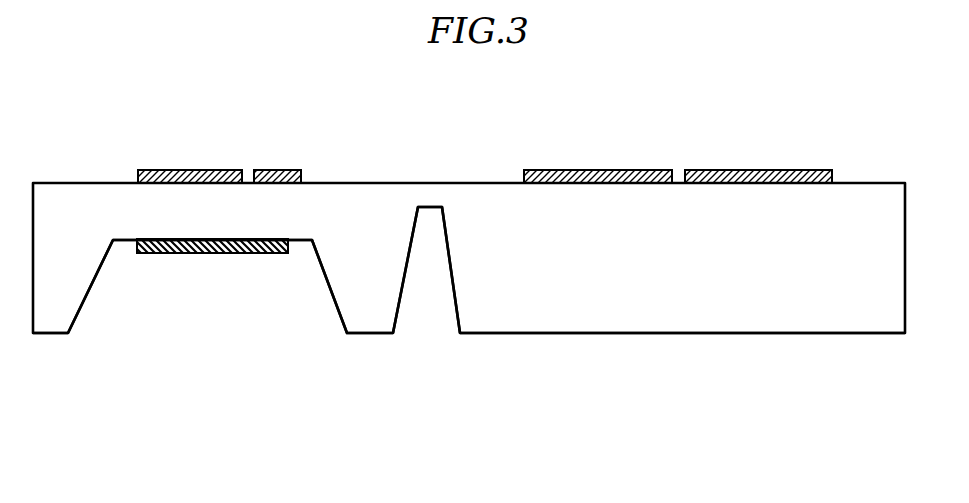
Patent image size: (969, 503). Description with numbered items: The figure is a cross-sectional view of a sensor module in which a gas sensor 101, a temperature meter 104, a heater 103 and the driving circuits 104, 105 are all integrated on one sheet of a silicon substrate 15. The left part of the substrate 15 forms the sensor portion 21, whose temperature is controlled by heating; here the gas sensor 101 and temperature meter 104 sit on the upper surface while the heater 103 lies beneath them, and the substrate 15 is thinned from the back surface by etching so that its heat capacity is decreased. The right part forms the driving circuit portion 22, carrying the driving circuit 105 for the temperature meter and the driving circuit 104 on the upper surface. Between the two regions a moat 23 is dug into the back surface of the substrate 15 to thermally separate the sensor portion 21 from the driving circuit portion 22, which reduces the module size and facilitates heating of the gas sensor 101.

The silicon substrate 15 is at (706, 280).
The gas sensor 101 is at (175, 170).
The temperature meter 104 is at (283, 170).
The driving circuit for the temperature meter 105 is at (752, 170).
The heater 103 is at (220, 254).
The moat 23 is at (427, 243).
The sensor portion 21 is at (73, 342).
The driving circuit portion 22 is at (477, 342).